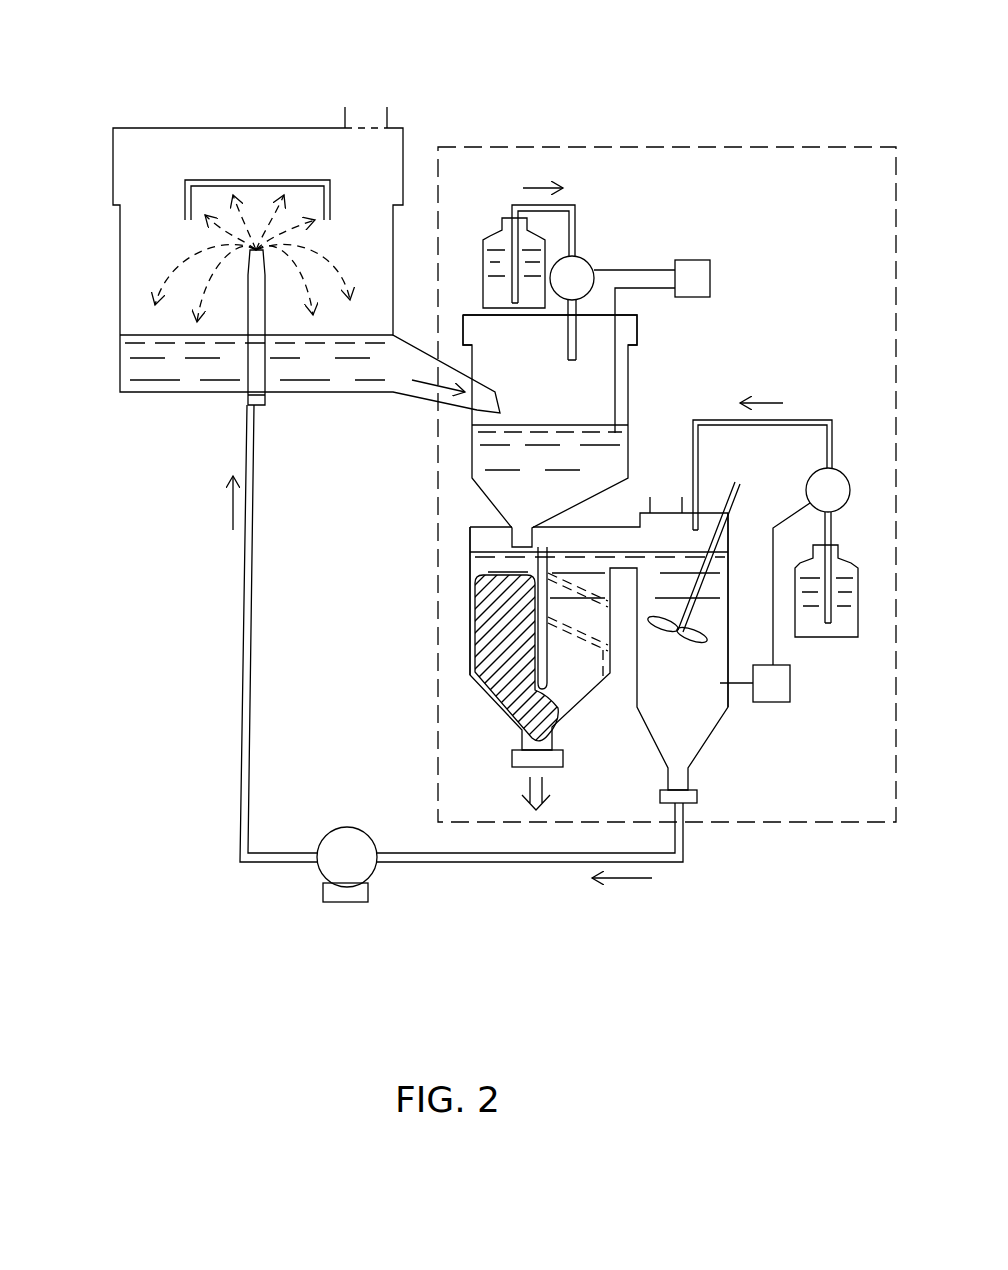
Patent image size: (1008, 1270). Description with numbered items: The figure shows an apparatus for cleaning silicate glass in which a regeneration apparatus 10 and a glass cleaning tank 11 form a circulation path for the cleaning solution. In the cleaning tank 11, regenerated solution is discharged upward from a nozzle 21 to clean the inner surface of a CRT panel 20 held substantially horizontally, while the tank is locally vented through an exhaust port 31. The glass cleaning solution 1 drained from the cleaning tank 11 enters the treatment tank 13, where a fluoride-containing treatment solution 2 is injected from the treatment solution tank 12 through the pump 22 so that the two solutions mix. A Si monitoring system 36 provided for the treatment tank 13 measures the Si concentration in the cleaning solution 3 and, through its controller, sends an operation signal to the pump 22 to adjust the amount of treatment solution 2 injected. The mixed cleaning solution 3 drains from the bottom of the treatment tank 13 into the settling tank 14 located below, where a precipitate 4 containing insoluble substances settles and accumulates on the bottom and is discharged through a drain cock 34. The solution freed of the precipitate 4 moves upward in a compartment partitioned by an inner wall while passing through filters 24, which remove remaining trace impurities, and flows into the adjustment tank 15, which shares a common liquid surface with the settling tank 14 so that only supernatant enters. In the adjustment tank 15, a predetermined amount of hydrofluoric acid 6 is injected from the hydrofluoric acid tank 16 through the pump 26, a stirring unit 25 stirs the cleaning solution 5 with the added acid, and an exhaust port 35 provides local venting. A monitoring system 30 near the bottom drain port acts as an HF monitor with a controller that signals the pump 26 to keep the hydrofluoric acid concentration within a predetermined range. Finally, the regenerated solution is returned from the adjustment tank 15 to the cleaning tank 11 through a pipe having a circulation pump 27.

The glass cleaning solution 1 is at (158, 383).
The treatment solution 2 is at (483, 290).
The cleaning solution 3 is at (633, 432).
The precipitate 4 is at (475, 655).
The cleaning solution 5 is at (728, 628).
The hydrofluoric acid 6 is at (845, 628).
The regeneration apparatus 10 is at (500, 147).
The glass cleaning tank 11 is at (113, 192).
The treatment solution tank 12 is at (483, 250).
The treatment tank 13 is at (640, 330).
The settling tank 14 is at (470, 553).
The adjustment tank 15 is at (733, 558).
The hydrofluoric acid tank 16 is at (840, 567).
The CRT panel 20 is at (328, 200).
The nozzle 21 is at (247, 293).
The pump 22 is at (582, 258).
The filters 24 is at (606, 690).
The stirring unit 25 is at (737, 484).
The pump 26 is at (838, 470).
The circulation pump 27 is at (322, 875).
The monitoring system 30 is at (785, 690).
The exhaust port 31 is at (372, 106).
The drain cock 34 is at (512, 760).
The exhaust port 35 is at (668, 497).
The Si monitoring system 36 is at (712, 278).